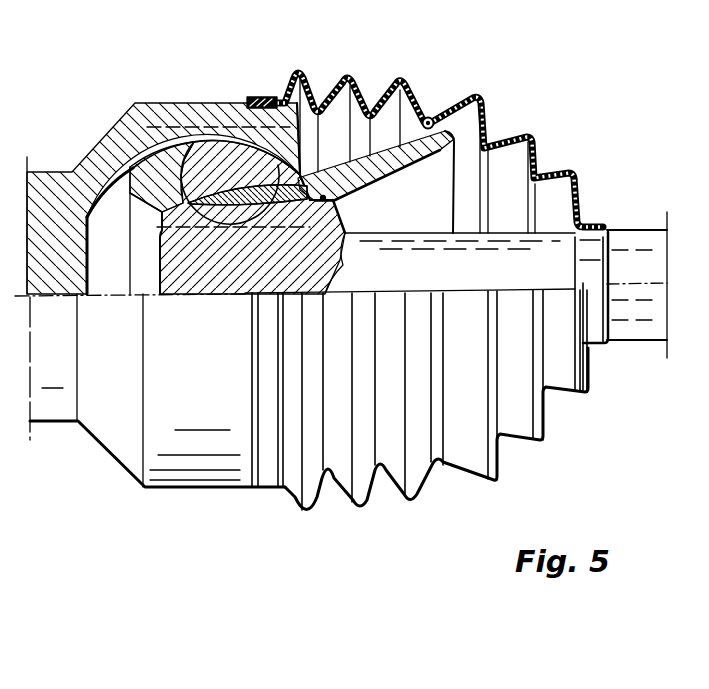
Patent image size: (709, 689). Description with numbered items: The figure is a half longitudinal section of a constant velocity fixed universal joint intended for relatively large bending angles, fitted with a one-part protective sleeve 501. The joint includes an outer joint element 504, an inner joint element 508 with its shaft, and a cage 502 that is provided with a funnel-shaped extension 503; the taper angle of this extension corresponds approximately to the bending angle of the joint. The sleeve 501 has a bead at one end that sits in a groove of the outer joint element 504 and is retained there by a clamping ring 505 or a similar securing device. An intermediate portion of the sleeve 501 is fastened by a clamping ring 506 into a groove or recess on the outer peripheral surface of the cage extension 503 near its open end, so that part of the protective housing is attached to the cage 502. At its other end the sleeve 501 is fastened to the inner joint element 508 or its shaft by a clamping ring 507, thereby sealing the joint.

The one-part sleeve 501 is at (520, 105).
The cage 502 is at (110, 163).
The funnel-shaped extension 503 is at (348, 165).
The outer joint element 504 is at (97, 148).
The clamping ring 505 is at (253, 98).
The clamping ring 506 is at (428, 117).
The clamping ring 507 is at (590, 220).
The inner joint element 508 is at (153, 187).